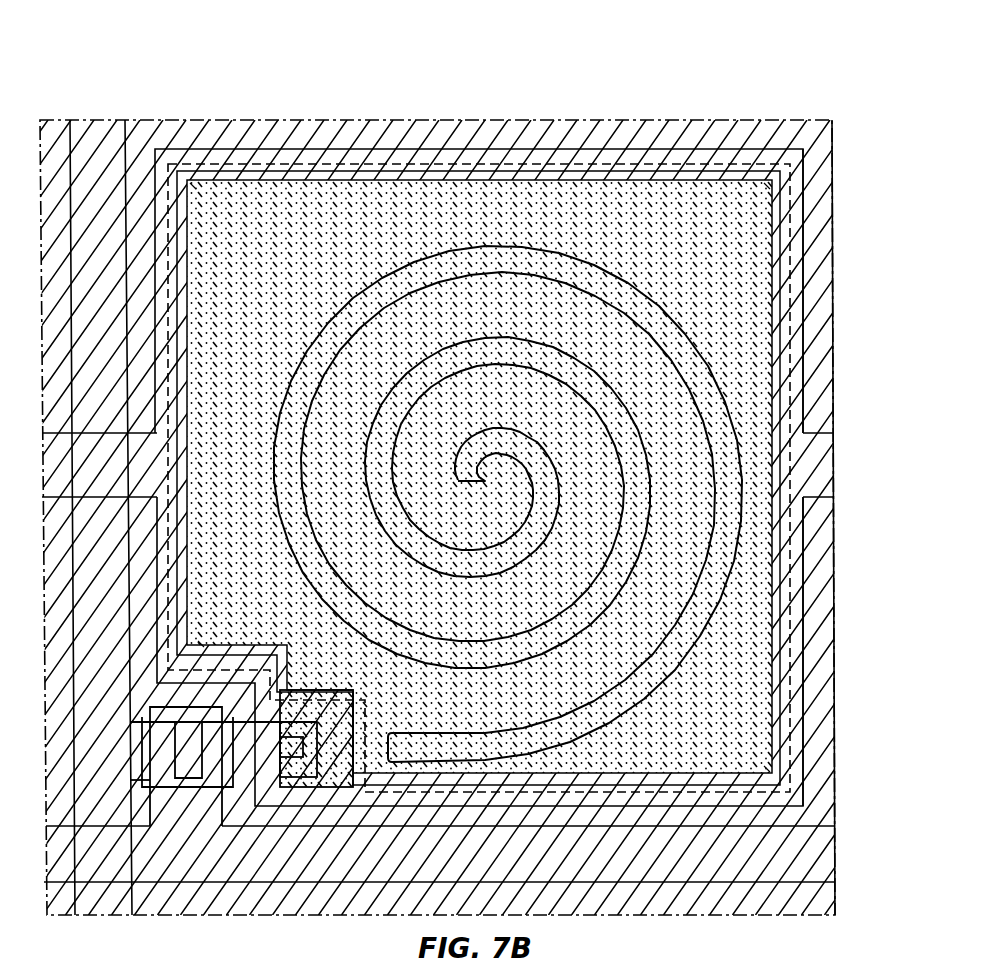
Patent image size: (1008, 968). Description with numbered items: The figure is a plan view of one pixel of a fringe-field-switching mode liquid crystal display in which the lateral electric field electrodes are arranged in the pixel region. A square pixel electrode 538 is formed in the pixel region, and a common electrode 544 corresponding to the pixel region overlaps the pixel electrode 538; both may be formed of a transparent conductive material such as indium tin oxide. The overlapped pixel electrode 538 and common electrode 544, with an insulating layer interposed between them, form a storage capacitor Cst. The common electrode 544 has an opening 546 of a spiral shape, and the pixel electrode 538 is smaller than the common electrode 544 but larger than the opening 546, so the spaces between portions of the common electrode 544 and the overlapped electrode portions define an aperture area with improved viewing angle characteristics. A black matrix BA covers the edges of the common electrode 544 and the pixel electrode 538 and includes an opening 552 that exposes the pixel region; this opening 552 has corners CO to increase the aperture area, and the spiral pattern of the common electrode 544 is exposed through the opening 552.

The common electrode 544 is at (274, 150).
The opening 552 is at (355, 172).
The black matrix BA is at (580, 130).
The storage capacitor Cst is at (700, 162).
The opening 546 is at (655, 326).
The pixel electrode 538 is at (792, 343).
The corners CO is at (195, 187).